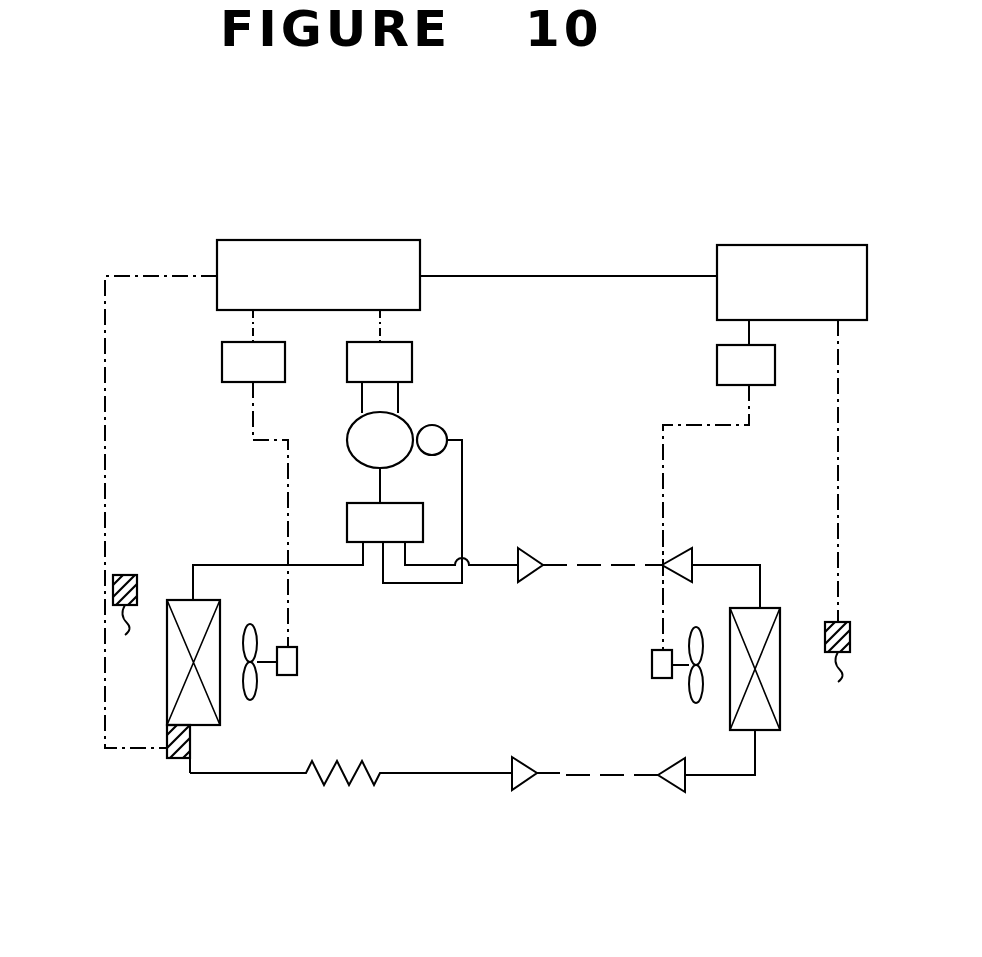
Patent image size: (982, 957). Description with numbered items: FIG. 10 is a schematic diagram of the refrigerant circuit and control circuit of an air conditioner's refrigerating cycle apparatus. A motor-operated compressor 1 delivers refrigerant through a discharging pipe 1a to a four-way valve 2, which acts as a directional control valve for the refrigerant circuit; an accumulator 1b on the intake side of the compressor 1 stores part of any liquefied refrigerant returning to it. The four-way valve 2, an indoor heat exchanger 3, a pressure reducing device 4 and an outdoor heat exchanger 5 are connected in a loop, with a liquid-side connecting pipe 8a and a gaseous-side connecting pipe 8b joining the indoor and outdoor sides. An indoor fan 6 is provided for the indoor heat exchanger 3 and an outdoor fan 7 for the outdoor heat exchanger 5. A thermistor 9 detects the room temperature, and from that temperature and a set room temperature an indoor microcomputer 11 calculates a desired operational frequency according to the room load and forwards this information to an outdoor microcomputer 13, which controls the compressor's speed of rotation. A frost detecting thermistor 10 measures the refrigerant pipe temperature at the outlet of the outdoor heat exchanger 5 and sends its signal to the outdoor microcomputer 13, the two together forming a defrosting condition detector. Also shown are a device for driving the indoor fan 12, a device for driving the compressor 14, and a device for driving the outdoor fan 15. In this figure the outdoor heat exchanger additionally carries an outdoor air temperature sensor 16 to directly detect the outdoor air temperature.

The motor-operated compressor 1 is at (352, 429).
The discharging pipe 1a is at (384, 480).
The accumulator 1b is at (440, 428).
The four-way valve 2 is at (347, 519).
The indoor heat exchanger 3 is at (780, 621).
The pressure reducing device 4 is at (335, 780).
The outdoor heat exchanger 5 is at (167, 697).
The indoor fan 6 is at (652, 670).
The outdoor fan 7 is at (297, 660).
The connecting pipe 8a is at (598, 762).
The connecting pipe 8b is at (605, 553).
The thermistor 9 is at (850, 646).
The frost detecting thermistor 10 is at (178, 758).
The indoor microcomputer 11 is at (812, 245).
The device for driving the indoor fan 12 is at (717, 376).
The outdoor microcomputer 13 is at (368, 240).
The device for driving the compressor 14 is at (412, 372).
The device for driving the outdoor fan 15 is at (222, 365).
The outdoor air temperature sensor 16 is at (125, 575).